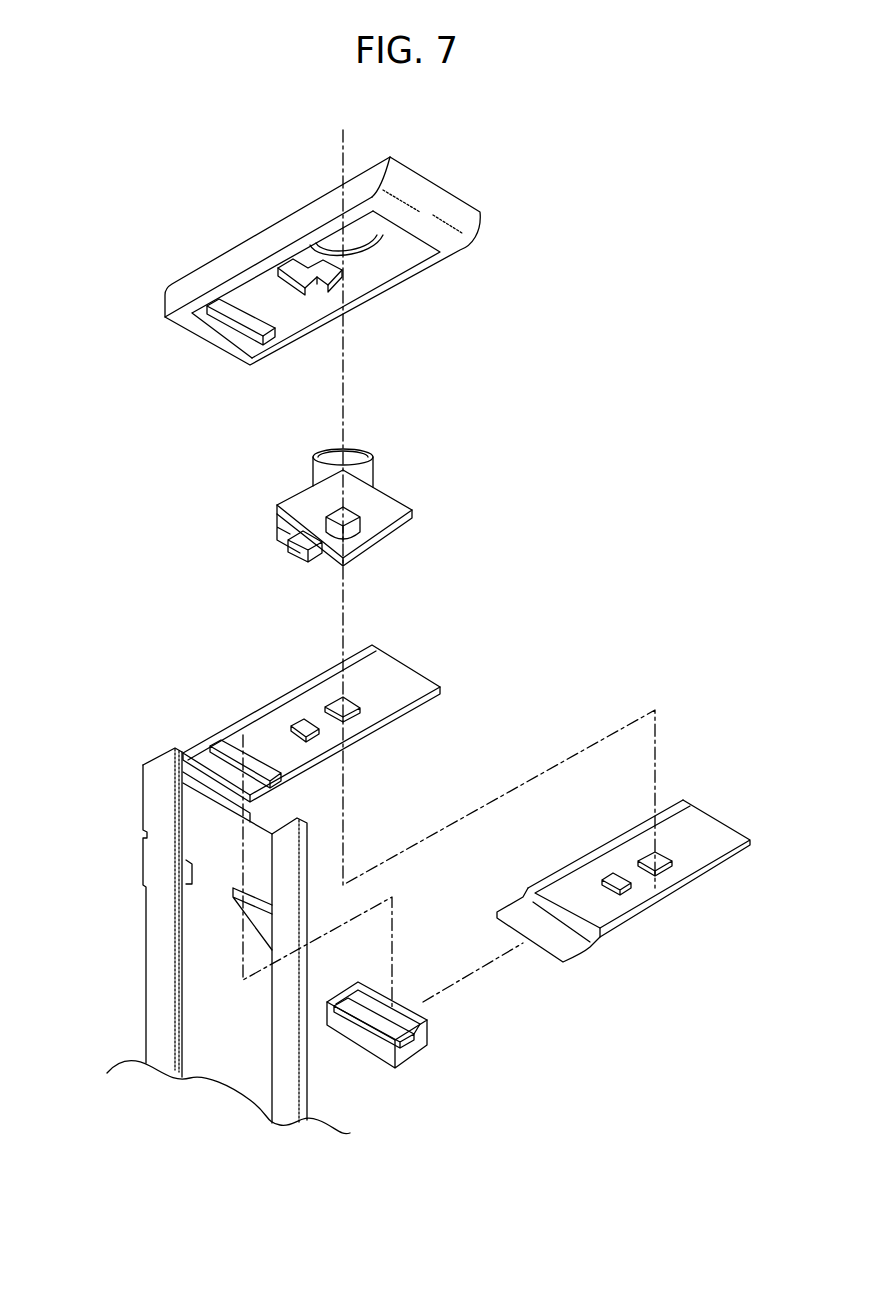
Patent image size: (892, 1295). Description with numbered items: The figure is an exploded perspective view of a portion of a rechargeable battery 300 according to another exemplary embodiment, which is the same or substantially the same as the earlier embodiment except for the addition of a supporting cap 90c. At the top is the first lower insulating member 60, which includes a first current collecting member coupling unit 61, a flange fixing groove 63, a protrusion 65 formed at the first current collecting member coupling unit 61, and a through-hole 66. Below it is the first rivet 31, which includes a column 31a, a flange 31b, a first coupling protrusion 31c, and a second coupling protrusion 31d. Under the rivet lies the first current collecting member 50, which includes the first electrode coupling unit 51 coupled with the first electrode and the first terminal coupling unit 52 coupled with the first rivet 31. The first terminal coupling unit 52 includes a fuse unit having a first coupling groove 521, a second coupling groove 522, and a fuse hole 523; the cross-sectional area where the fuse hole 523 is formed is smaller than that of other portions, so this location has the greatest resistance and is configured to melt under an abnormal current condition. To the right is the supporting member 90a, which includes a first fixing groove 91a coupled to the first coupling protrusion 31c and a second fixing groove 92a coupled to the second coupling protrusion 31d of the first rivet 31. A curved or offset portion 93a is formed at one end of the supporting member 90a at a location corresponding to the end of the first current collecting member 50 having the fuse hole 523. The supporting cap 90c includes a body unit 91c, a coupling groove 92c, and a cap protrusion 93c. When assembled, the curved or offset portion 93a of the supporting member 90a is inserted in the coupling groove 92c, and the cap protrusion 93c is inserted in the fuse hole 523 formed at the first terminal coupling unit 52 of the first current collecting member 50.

The rechargeable battery 300 is at (600, 180).
The first lower insulating member 60 is at (215, 237).
The first current collecting member coupling unit 61 is at (290, 301).
The flange fixing groove 63 is at (395, 255).
The protrusion 65 is at (233, 323).
The through-hole 66 is at (357, 257).
The first rivet 31 is at (250, 525).
The column 31a is at (323, 467).
The flange 31b is at (383, 498).
The first coupling protrusion 31c is at (352, 537).
The second coupling protrusion 31d is at (303, 557).
The first terminal coupling unit 52 is at (415, 673).
The first coupling groove 521 is at (348, 713).
The second coupling groove 522 is at (303, 738).
The fuse hole 523 is at (217, 757).
The first current collecting member 50 is at (135, 820).
The first electrode coupling unit 51 is at (210, 957).
The supporting member 90a is at (712, 805).
The first fixing groove 91a is at (660, 867).
The second fixing groove 92a is at (613, 887).
The curved or offset portion 93a is at (547, 943).
The supporting cap 90c is at (413, 1065).
The body unit 91c is at (345, 1008).
The coupling groove 92c is at (427, 1018).
The cap protrusion 93c is at (397, 997).